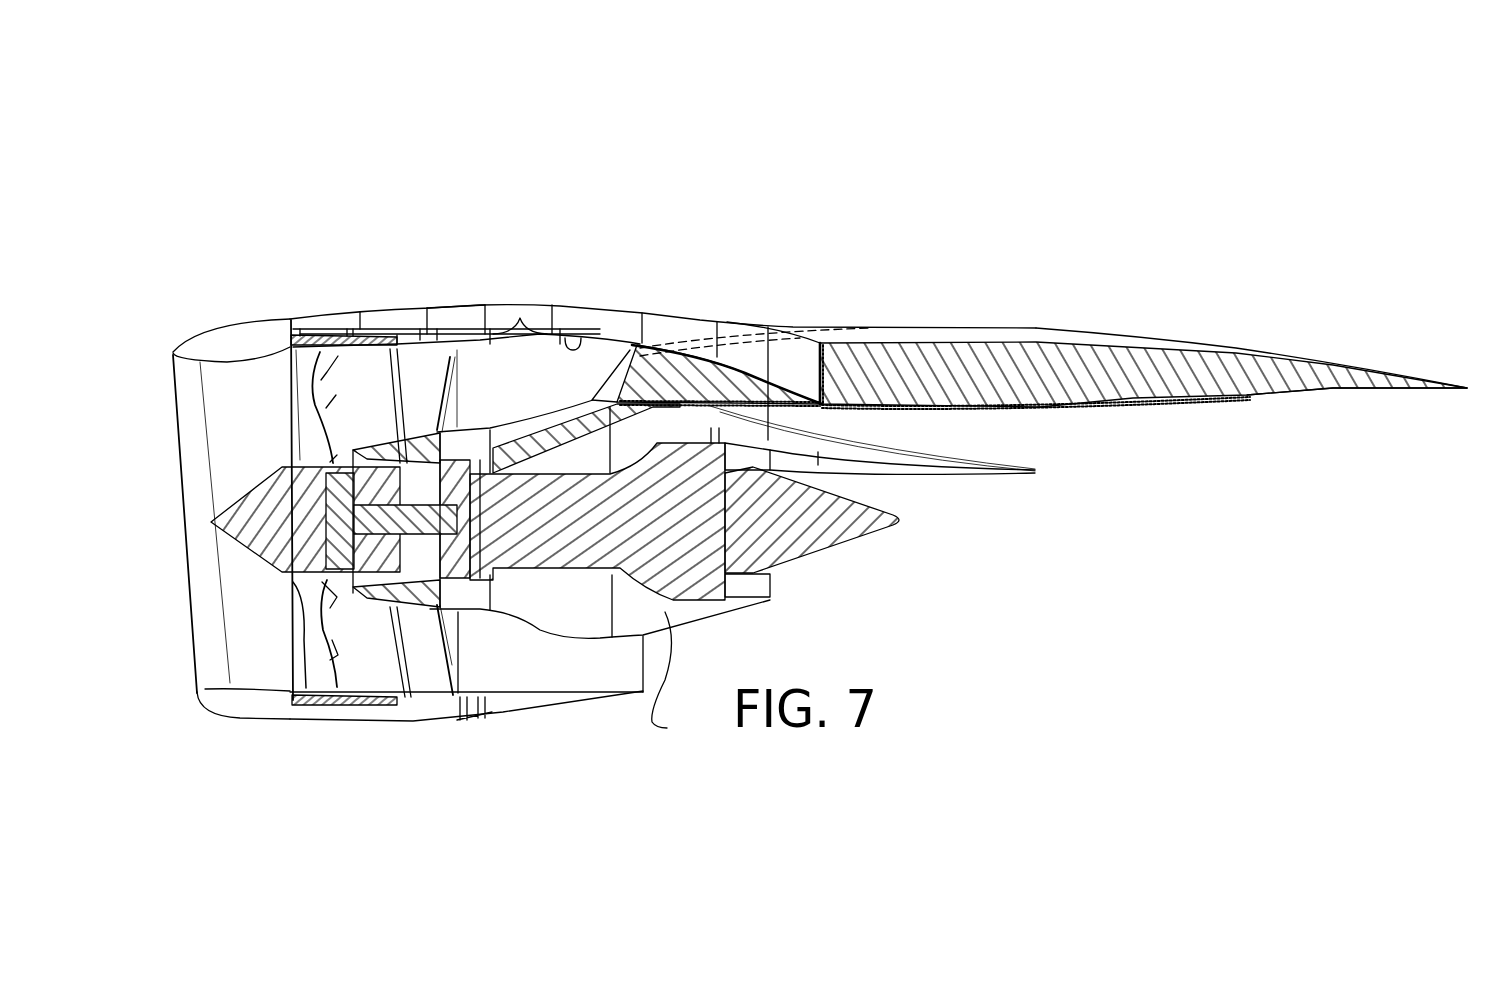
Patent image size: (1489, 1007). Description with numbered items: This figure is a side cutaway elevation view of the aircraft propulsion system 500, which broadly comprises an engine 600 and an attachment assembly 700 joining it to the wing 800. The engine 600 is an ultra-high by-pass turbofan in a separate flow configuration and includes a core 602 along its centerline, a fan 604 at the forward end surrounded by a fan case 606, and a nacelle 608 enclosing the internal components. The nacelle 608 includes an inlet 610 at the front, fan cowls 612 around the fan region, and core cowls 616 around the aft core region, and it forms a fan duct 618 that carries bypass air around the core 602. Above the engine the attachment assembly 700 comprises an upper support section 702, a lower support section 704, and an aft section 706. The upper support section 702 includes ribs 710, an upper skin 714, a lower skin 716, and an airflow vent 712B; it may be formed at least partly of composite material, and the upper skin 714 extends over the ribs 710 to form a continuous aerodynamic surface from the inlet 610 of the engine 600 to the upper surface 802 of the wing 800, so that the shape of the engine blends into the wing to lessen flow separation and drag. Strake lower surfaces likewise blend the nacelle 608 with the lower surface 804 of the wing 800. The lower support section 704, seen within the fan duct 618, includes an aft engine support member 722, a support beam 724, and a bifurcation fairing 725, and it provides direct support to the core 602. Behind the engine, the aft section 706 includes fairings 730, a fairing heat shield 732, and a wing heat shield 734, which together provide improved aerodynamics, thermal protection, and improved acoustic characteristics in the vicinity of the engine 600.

The aircraft propulsion system 500 is at (321, 138).
The engine 600 is at (304, 248).
The core 602 is at (545, 597).
The fan 604 is at (266, 634).
The fan case 606 is at (332, 715).
The nacelle 608 is at (466, 757).
The inlet 610 is at (187, 513).
The fan cowls 612 is at (355, 725).
The core cowls 616 is at (588, 623).
The fan duct 618 is at (605, 687).
The attachment assembly 700 is at (643, 265).
The upper support section 702 is at (703, 283).
The lower support section 704 is at (755, 346).
The aft section 706 is at (930, 503).
The ribs 710 is at (520, 322).
The airflow vent 712B is at (723, 334).
The upper skin 714 is at (445, 308).
The lower skin 716 is at (581, 343).
The aft engine support member 722 is at (795, 372).
The support beam 724 is at (547, 437).
The bifurcation fairing 725 is at (600, 382).
The fairings 730 is at (1010, 442).
The fairing heat shield 732 is at (947, 478).
The wing heat shield 734 is at (1120, 408).
The wing 800 is at (1131, 274).
The upper surface 802 is at (1185, 338).
The lower surface 804 is at (1290, 392).